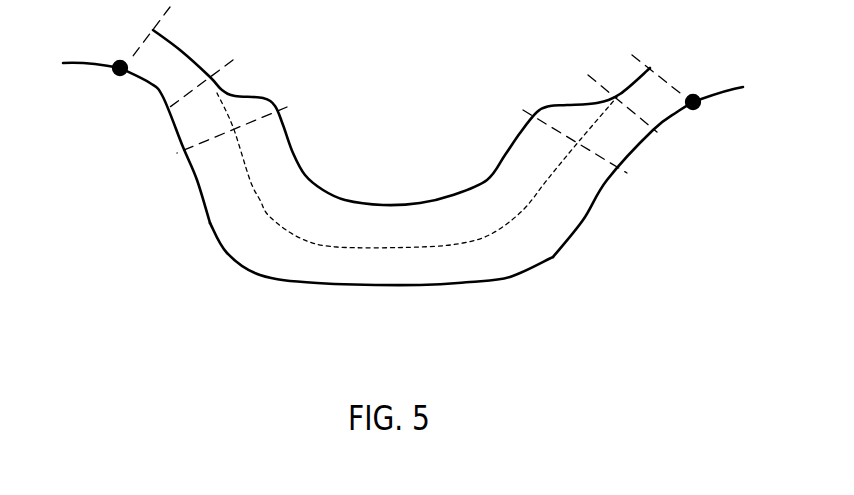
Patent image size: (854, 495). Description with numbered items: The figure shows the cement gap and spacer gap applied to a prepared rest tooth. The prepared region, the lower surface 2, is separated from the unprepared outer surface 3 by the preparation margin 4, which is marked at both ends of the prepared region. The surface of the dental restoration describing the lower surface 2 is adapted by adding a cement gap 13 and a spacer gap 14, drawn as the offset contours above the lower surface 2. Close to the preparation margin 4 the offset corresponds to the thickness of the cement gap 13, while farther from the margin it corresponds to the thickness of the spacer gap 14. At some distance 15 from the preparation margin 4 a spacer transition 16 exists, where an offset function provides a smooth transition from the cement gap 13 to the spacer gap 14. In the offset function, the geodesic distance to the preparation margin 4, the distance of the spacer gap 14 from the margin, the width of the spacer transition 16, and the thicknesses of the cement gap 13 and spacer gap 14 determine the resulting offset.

The lower surface 2 is at (397, 287).
The outer surface 3 is at (73, 65).
The preparation margin 4 is at (112, 62).
The cement gap 13 is at (530, 245).
The spacer gap 14 is at (388, 227).
The distance 15 is at (155, 117).
The spacer transition 16 is at (250, 98).